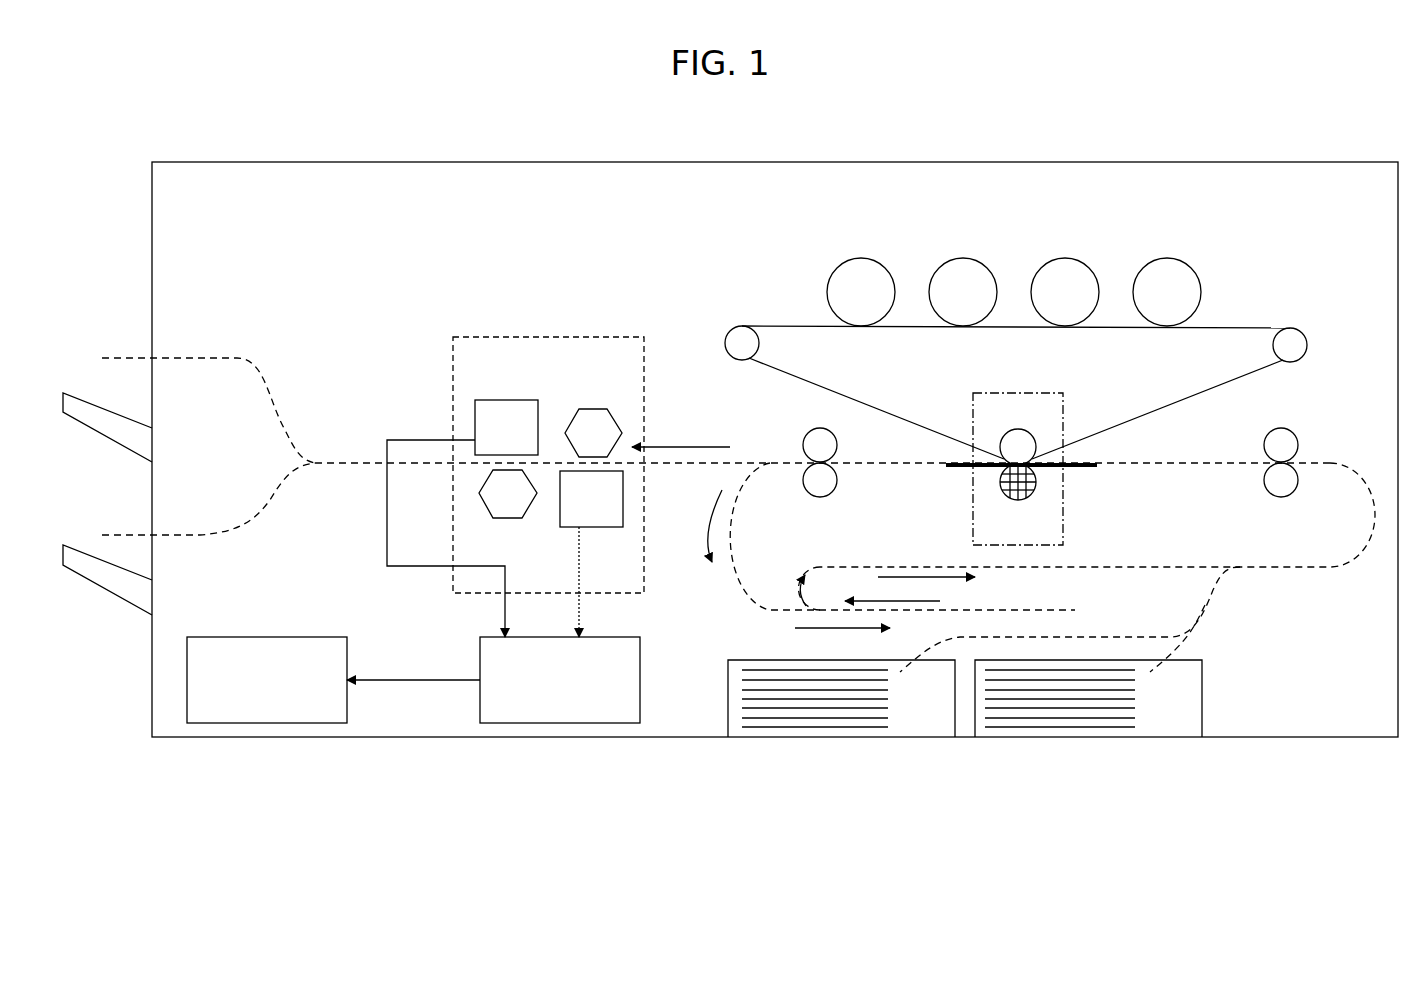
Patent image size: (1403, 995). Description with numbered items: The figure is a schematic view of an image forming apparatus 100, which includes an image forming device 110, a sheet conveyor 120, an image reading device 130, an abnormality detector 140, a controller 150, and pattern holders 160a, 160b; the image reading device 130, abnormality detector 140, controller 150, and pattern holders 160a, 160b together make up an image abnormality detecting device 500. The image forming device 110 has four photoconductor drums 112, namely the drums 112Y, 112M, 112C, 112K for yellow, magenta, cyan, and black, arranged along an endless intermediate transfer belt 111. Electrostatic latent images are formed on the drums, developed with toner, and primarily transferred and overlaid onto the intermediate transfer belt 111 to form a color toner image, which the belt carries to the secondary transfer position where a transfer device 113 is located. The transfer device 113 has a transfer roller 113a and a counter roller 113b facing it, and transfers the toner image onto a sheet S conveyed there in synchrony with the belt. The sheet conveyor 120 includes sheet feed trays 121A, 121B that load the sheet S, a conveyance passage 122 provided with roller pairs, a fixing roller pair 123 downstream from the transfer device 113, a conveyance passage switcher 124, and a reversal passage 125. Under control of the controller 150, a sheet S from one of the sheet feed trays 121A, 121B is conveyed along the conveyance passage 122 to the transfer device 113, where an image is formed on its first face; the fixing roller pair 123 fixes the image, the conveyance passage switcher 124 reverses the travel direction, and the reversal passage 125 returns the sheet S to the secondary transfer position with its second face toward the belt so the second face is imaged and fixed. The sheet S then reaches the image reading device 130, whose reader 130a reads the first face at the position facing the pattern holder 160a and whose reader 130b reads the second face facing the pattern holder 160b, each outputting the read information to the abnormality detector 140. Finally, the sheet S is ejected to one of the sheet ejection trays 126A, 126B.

The image forming apparatus 100 is at (1352, 162).
The image forming device 110 is at (1302, 292).
The intermediate transfer belt 111 is at (1113, 430).
The photoconductor drums 112 is at (812, 213).
The photoconductor drum 112K is at (846, 266).
The photoconductor drum 112C is at (948, 266).
The photoconductor drum 112M is at (1050, 266).
The photoconductor drum 112Y is at (1153, 266).
The transfer device 113 is at (1040, 392).
The transfer roller 113a is at (1018, 430).
The counter roller 113b is at (1020, 500).
The sheet S is at (950, 470).
The sheet conveyor 120 is at (1305, 582).
The sheet feed tray 121A is at (1165, 732).
The sheet feed tray 121B is at (918, 732).
The conveyance passage 122 is at (1333, 463).
The fixing roller pair 123 is at (842, 490).
The conveyance passage switcher 124 is at (742, 600).
The reversal passage 125 is at (820, 567).
The sheet ejection tray 126A is at (63, 393).
The sheet ejection tray 126B is at (63, 545).
The image reading device 130 is at (606, 336).
The reader 130a is at (597, 529).
The reader 130b is at (517, 399).
The abnormality detector 140 is at (480, 705).
The controller 150 is at (347, 637).
The pattern holder 160a is at (614, 422).
The pattern holder 160b is at (482, 507).
The image abnormality detecting device 500 is at (350, 363).